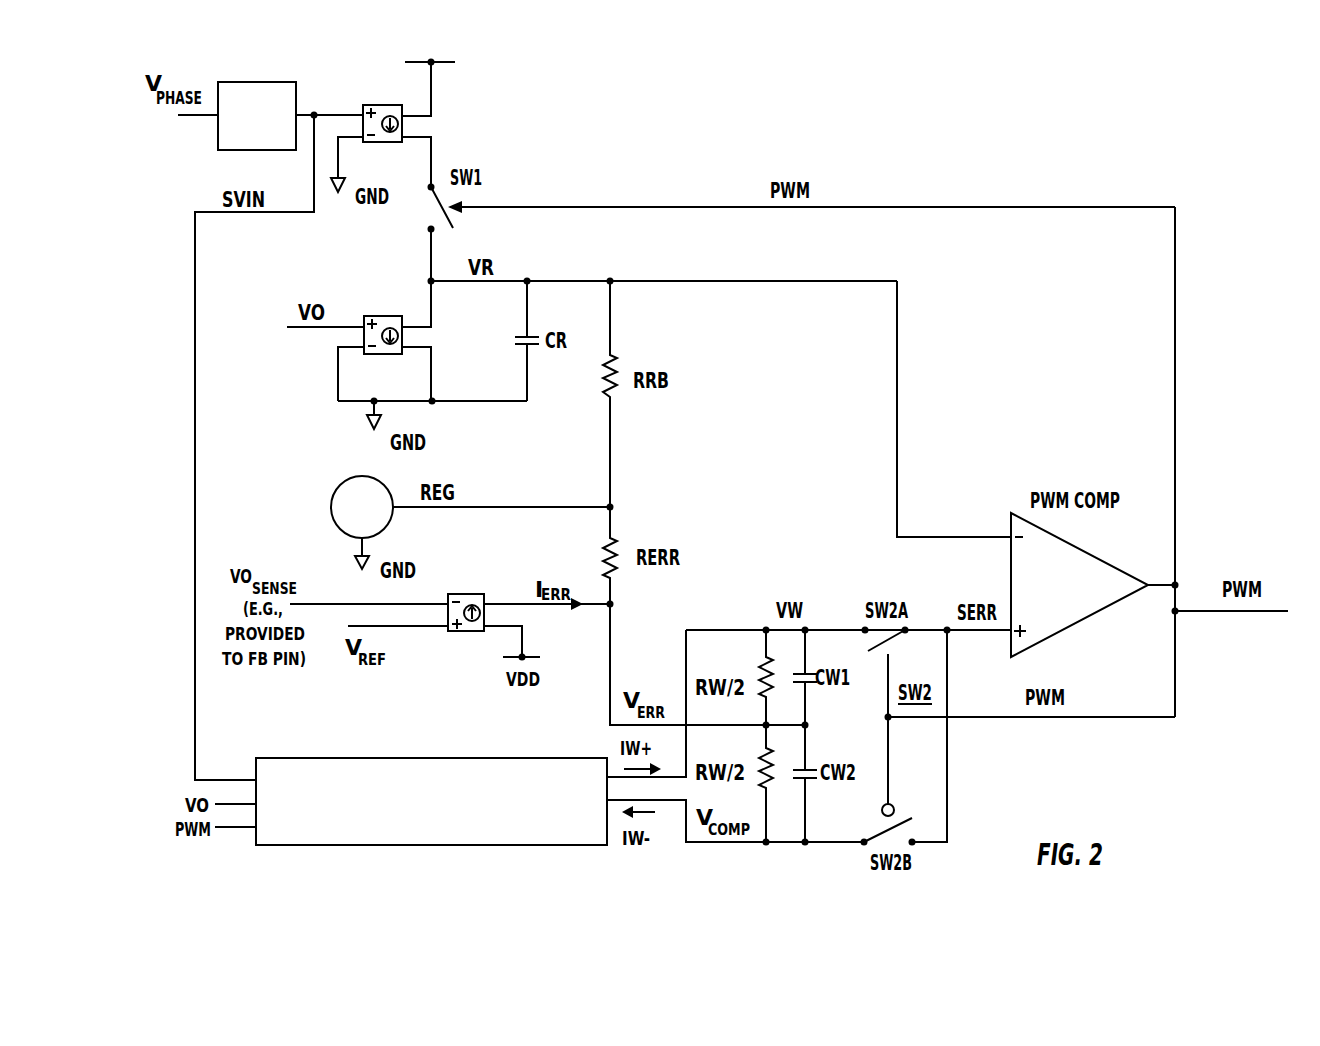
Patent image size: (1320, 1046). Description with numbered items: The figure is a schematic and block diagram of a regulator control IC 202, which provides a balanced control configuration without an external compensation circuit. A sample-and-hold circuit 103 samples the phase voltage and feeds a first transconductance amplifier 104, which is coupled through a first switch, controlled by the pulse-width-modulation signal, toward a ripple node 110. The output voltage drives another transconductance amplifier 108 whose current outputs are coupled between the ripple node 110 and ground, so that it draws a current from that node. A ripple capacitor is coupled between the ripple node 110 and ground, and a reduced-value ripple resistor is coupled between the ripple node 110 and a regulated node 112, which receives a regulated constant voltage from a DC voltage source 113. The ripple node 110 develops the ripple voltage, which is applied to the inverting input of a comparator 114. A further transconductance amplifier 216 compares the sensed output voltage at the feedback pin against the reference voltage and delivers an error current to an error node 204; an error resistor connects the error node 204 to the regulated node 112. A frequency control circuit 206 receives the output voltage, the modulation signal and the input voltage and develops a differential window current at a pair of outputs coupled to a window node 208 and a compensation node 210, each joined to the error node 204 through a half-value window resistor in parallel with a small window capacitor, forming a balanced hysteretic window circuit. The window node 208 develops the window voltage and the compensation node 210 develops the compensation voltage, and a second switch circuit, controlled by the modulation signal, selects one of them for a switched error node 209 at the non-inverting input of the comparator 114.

The S&H circuit 103 is at (240, 140).
The transconductance amplifier 104 is at (393, 139).
The transconductance amplifier 108 is at (359, 360).
The node 110 is at (611, 280).
The node 112 is at (608, 505).
The DC voltage source 113 is at (347, 520).
The comparator 114 is at (1070, 607).
The regulator control IC 202 is at (1165, 807).
The error node 204 is at (608, 690).
The frequency control circuit 206 is at (409, 833).
The node 208 is at (727, 629).
The node 209 is at (947, 628).
The node 210 is at (726, 844).
The transconductance amplifier 216 is at (387, 598).